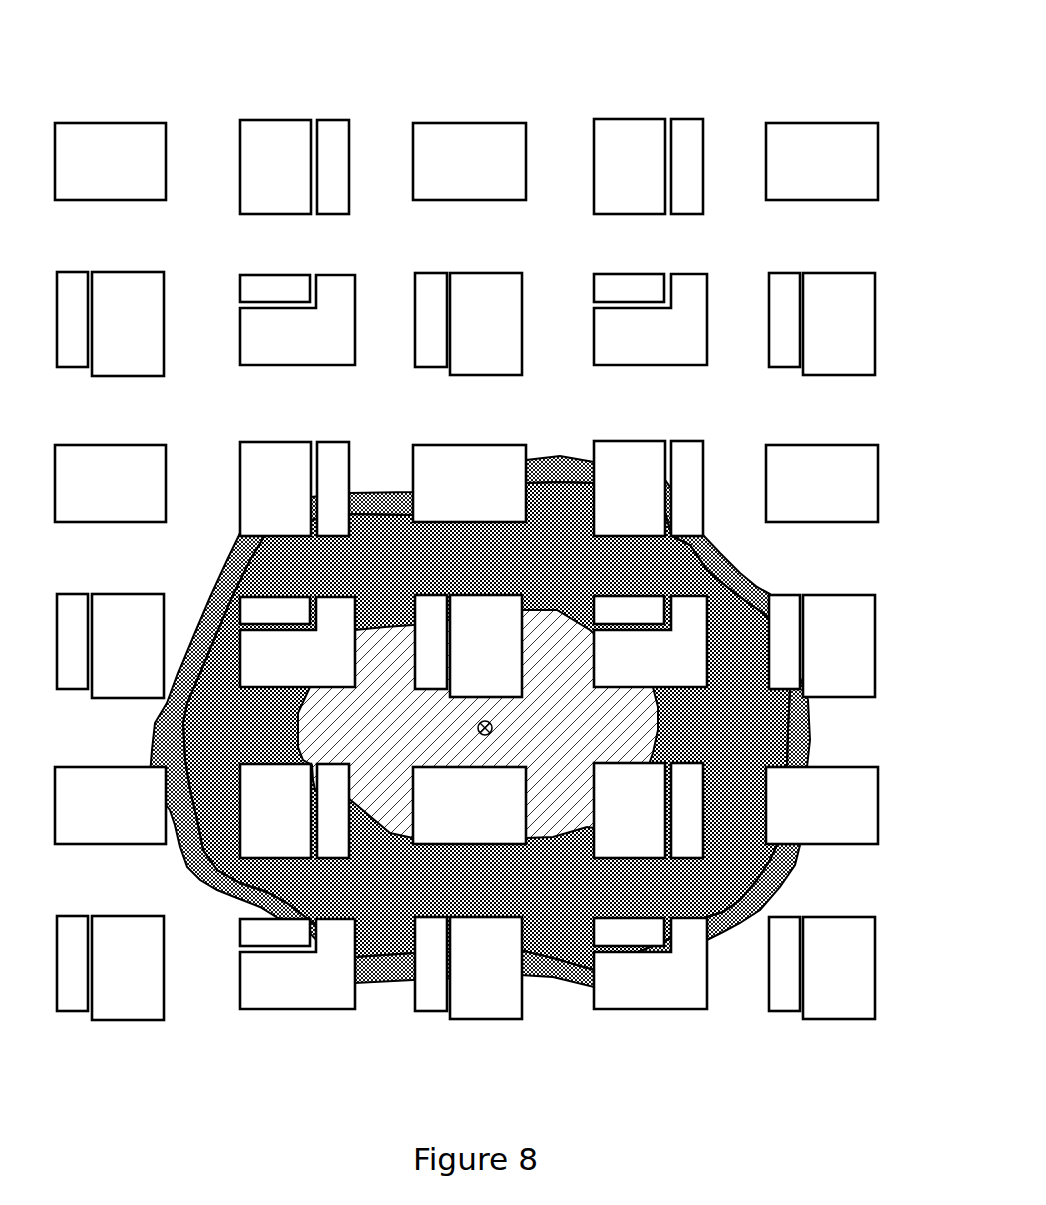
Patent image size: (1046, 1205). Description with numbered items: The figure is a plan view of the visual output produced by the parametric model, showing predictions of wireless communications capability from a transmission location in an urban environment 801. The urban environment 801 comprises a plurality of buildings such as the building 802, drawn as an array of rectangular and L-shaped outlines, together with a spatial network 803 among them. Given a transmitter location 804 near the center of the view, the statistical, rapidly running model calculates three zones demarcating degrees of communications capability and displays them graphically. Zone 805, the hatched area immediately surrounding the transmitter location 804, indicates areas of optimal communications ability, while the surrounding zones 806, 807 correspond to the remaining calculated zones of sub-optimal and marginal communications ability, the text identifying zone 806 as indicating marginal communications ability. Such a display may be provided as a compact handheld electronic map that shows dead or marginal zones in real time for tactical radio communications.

The urban environment 801 is at (616, 52).
The building 802 is at (423, 123).
The spatial network 803 is at (225, 423).
The transmitter location 804 is at (492, 722).
The zone 805 is at (417, 739).
The zone 806 is at (261, 735).
The region boundary band 807 is at (160, 712).